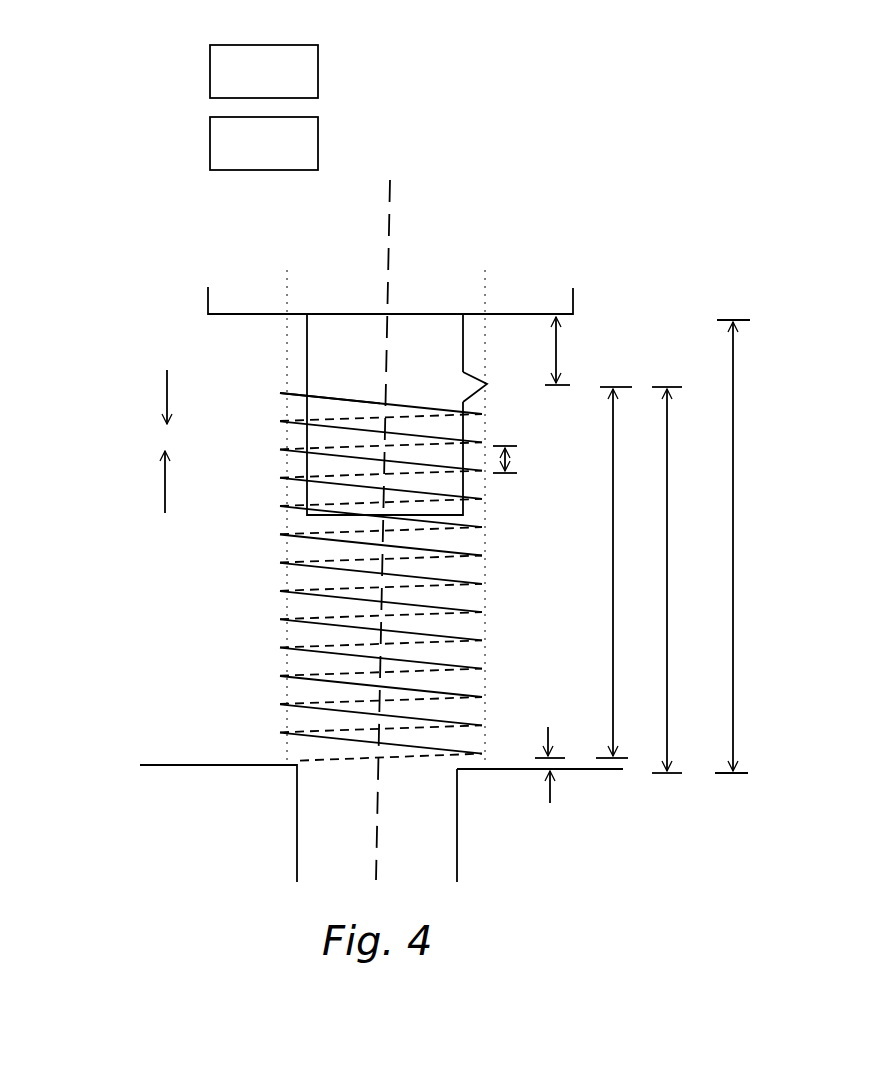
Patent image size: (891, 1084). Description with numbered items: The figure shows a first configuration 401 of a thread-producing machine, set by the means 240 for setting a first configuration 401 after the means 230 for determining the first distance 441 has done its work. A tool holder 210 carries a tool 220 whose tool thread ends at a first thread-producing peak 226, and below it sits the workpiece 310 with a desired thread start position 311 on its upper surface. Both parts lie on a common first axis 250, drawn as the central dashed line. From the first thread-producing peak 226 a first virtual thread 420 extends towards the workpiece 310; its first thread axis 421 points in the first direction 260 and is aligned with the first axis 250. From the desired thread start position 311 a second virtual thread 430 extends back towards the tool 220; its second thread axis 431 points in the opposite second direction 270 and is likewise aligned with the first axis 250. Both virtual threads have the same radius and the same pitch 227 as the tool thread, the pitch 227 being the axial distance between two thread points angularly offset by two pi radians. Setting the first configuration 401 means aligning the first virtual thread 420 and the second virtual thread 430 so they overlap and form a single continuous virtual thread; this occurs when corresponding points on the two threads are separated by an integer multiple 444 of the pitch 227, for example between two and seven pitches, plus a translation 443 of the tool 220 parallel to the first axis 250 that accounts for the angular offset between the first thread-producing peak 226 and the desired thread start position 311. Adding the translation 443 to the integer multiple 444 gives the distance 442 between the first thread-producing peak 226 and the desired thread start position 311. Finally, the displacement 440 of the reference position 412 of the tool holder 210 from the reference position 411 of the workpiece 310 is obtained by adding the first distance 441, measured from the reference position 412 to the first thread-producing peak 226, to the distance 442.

The tool holder 210 is at (580, 292).
The tool 220 is at (305, 362).
The first thread-producing peak 226 is at (490, 382).
The pitch 227 is at (529, 460).
The means for determining the first distance 230 is at (210, 98).
The means for setting a first configuration 240 is at (210, 170).
The first axis 250 is at (393, 188).
The first direction 260 is at (158, 394).
The second direction 270 is at (155, 468).
The workpiece 310 is at (277, 842).
The desired thread start position 311 is at (293, 760).
The first configuration 401 is at (605, 219).
The reference position of the workpiece 411 is at (557, 775).
The reference position of the tool holder 412 is at (553, 310).
The first virtual thread 420 is at (450, 606).
The first thread axis 421 is at (390, 396).
The second virtual thread 430 is at (302, 612).
The second thread axis 431 is at (400, 770).
The displacement 440 is at (736, 471).
The first distance 441 is at (565, 352).
The distance between first thread-producing peak and thread start position 442 is at (666, 538).
The translation 443 is at (532, 752).
The integer multiple of the pitch 444 is at (610, 572).